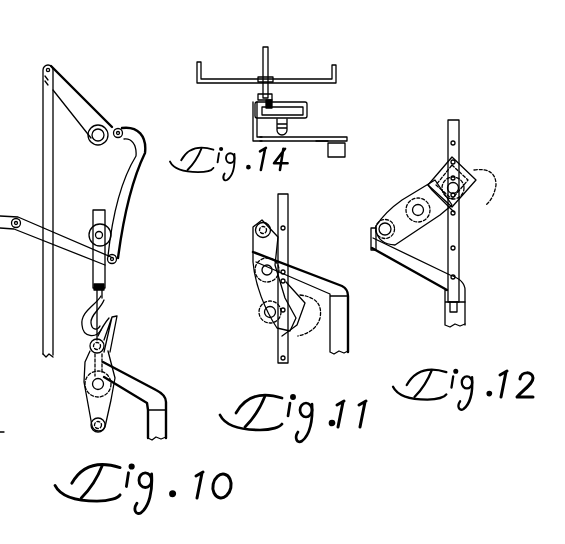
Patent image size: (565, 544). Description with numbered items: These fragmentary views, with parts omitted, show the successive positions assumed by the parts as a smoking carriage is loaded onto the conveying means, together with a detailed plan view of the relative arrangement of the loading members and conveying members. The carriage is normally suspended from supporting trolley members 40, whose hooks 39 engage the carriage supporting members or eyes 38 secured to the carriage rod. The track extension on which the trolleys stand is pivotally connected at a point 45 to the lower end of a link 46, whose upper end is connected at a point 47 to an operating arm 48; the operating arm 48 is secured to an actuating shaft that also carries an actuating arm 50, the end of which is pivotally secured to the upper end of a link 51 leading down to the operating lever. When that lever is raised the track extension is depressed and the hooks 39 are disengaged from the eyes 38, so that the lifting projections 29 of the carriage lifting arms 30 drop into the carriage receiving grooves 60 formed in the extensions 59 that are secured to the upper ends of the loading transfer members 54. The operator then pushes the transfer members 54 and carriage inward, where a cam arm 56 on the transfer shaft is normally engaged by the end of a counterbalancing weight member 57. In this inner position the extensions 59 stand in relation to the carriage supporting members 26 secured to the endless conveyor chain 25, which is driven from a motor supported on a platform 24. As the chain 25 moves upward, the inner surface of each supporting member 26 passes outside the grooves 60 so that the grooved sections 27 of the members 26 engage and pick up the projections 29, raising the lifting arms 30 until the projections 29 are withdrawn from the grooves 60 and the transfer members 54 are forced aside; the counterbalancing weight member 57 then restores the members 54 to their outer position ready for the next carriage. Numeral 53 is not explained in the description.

In FIG. 14, the platform 24 is at (280, 83).
In FIG. 14, the endless chain 25 is at (288, 130).
In FIG. 11, the endless chain 25 is at (289, 210).
In FIG. 12, the endless chain 25 is at (462, 156).
In FIG. 14, the carriage supporting member 26 is at (289, 122).
In FIG. 11, the carriage supporting member 26 is at (263, 318).
In FIG. 12, the carriage supporting member 26 is at (476, 170).
In FIG. 14, the grooved section 27 is at (305, 103).
In FIG. 11, the grooved section 27 is at (316, 314).
In FIG. 12, the grooved section 27 is at (490, 178).
In FIG. 10, the lifting projection 29 is at (90, 346).
In FIG. 14, the lifting projection 29 is at (251, 120).
In FIG. 10, the lifting arm 30 is at (104, 411).
In FIG. 11, the lifting arm 30 is at (265, 287).
In FIG. 12, the lifting arm 30 is at (399, 208).
In FIG. 10, the carriage supporting eye 38 is at (117, 317).
In FIG. 10, the hook 39 is at (92, 311).
In FIG. 10, the supporting trolley member 40 is at (94, 237).
In FIG. 10, the pivot point 45 is at (117, 262).
In FIG. 10, the link 46 is at (136, 168).
In FIG. 10, the pivot point 47 is at (122, 128).
In FIG. 10, the operating arm 48 is at (99, 146).
In FIG. 10, the actuating arm 50 is at (86, 120).
In FIG. 10, the link 51 is at (46, 143).
In FIG. 14, the cross plate 53 is at (308, 78).
In FIG. 10, the loading transfer member 54 is at (14, 433).
In FIG. 14, the loading transfer member 54 is at (346, 150).
In FIG. 11, the cam arm 56 is at (322, 280).
In FIG. 12, the cam arm 56 is at (424, 270).
In FIG. 11, the counterbalancing weight member 57 is at (272, 221).
In FIG. 10, the extension 59 is at (146, 390).
In FIG. 14, the extension 59 is at (320, 143).
In FIG. 14, the carriage receiving groove 60 is at (255, 103).